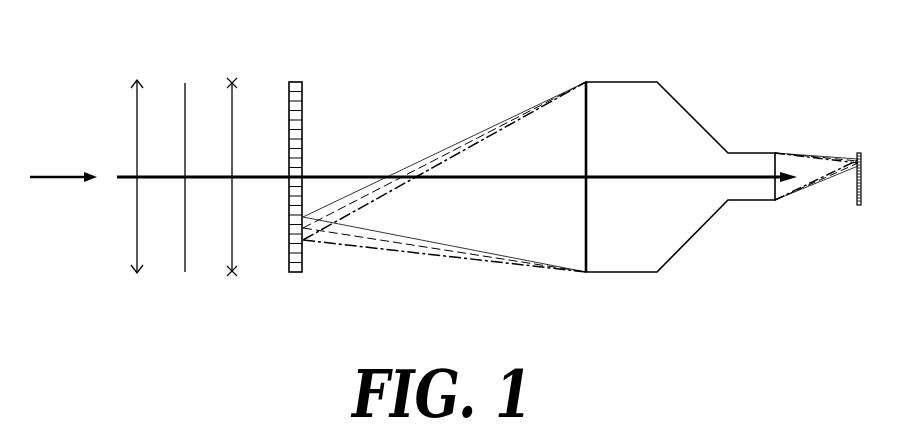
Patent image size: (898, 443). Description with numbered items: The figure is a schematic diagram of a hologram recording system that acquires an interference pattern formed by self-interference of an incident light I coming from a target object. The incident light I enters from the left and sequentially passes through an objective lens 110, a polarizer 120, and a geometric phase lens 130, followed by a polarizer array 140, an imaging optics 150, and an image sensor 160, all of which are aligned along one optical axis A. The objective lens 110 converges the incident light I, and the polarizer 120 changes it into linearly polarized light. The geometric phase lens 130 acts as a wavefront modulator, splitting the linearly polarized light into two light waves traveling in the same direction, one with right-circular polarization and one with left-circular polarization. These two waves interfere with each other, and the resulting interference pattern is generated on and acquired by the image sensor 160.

The objective lens 110 is at (137, 102).
The polarizer 120 is at (187, 88).
The geometric phase lens 130 is at (233, 85).
The polarizer array 140 is at (303, 90).
The imaging optics 150 is at (624, 87).
The image sensor 160 is at (858, 205).
The optical axis A is at (361, 177).
The incident light I is at (55, 177).